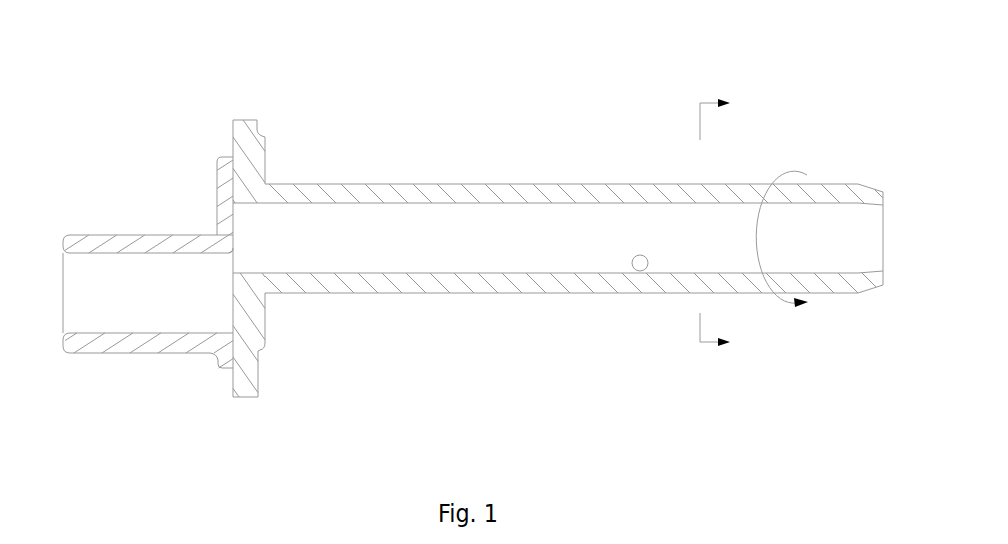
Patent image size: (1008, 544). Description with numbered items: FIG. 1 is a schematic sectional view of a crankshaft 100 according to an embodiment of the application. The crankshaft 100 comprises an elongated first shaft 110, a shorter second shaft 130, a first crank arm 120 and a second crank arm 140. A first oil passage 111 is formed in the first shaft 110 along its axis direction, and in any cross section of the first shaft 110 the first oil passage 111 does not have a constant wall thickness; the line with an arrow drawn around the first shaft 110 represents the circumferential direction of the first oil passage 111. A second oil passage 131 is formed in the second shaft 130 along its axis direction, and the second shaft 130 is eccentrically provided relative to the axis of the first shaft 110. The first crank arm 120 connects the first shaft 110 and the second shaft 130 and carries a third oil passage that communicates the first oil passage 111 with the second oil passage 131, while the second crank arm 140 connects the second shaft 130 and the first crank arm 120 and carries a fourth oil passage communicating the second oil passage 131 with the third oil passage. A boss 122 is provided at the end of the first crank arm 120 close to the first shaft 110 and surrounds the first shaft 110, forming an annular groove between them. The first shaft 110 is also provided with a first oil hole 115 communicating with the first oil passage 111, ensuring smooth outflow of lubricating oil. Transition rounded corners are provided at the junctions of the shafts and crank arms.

The crankshaft 100 is at (124, 48).
The first shaft 110 is at (402, 187).
The first oil passage 111 is at (448, 247).
The first oil hole 115 is at (640, 263).
The first crank arm 120 is at (242, 363).
The boss 122 is at (262, 158).
The second shaft 130 is at (102, 240).
The second oil passage 131 is at (123, 292).
The second crank arm 140 is at (219, 359).